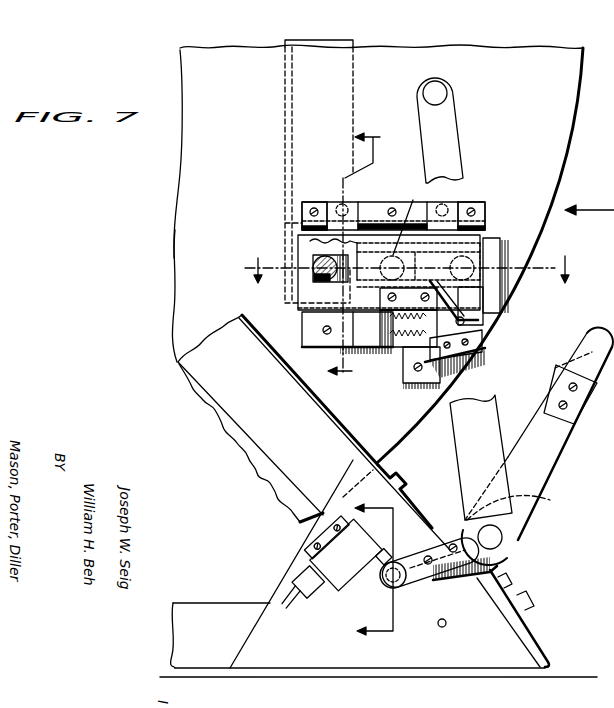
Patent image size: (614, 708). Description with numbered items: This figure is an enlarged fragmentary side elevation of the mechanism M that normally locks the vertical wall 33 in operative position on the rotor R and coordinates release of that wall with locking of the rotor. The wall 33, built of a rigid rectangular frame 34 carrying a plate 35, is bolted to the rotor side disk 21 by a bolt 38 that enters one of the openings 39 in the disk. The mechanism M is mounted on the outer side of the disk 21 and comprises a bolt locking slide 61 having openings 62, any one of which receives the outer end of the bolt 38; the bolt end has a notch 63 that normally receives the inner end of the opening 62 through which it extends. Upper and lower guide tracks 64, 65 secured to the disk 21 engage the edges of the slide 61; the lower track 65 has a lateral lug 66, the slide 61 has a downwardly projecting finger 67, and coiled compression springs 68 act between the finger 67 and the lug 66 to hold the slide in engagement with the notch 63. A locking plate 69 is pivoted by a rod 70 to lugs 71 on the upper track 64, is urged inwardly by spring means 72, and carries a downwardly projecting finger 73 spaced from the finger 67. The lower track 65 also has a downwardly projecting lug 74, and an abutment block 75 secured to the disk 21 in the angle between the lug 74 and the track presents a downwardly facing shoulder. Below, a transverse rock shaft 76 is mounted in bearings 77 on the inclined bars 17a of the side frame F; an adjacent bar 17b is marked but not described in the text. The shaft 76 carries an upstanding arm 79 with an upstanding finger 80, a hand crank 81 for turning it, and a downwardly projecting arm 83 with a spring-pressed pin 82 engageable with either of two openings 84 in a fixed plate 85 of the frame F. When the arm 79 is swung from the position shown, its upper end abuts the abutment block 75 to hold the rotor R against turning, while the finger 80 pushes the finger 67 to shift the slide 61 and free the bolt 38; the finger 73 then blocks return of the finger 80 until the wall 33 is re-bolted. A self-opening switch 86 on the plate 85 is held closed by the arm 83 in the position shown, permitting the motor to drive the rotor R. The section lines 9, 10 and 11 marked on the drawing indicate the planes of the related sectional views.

The rotor R is at (183, 187).
The side frame F is at (305, 432).
The mechanism M is at (495, 213).
The section line 9- 9 is at (410, 269).
The section line 10- 10 is at (355, 255).
The section line 11- 11 is at (357, 563).
The inclined bar 17a is at (283, 450).
The rail 17b is at (430, 483).
The side disk 21 is at (185, 241).
The vertical wall 33 is at (297, 36).
The rigid rectangular frame 34 is at (348, 42).
The plate 35 is at (283, 75).
The bolt 38 is at (313, 274).
The openings 39 is at (500, 245).
The bolt locking slide 61 is at (492, 288).
The openings 62 is at (404, 262).
The notch 63 is at (320, 263).
The upper guide track 64 is at (313, 206).
The lower guide track 65 is at (303, 325).
The lateral lug 66 is at (363, 340).
The finger 67 is at (452, 360).
The coiled compression springs 68 is at (395, 348).
The locking plate 69 is at (484, 239).
The rod 70 is at (390, 226).
The lugs 71 is at (302, 223).
The spring means 72 is at (341, 205).
The finger 73 is at (470, 300).
The lug 74 is at (413, 360).
The abutment block 75 is at (465, 350).
The rock shaft 76 is at (502, 535).
The bearings 77 is at (533, 512).
The upstanding arm 79 is at (550, 467).
The upstanding finger 80 is at (583, 331).
The hand crank 81 is at (493, 413).
The spring-pressed pin 82 is at (400, 590).
The downwardly projecting arm 83 is at (440, 578).
The openings 84 is at (446, 624).
The fixed plate 85 is at (288, 585).
The switch 86 is at (333, 568).